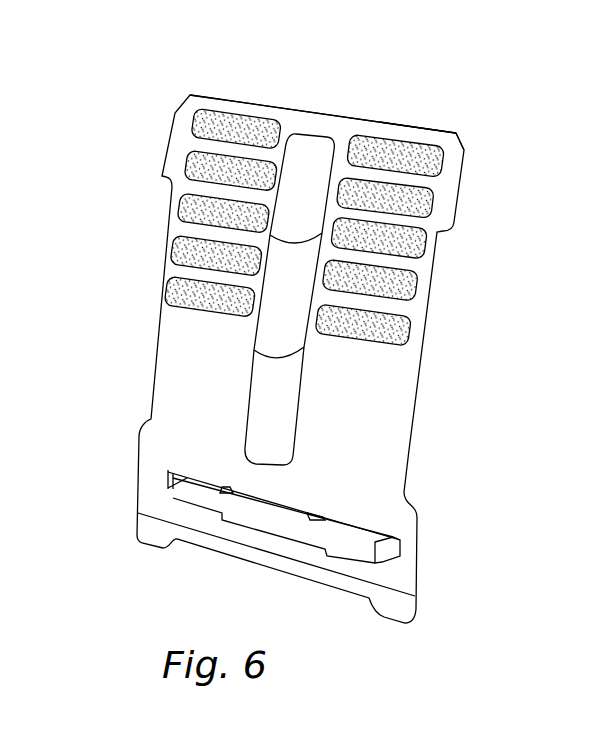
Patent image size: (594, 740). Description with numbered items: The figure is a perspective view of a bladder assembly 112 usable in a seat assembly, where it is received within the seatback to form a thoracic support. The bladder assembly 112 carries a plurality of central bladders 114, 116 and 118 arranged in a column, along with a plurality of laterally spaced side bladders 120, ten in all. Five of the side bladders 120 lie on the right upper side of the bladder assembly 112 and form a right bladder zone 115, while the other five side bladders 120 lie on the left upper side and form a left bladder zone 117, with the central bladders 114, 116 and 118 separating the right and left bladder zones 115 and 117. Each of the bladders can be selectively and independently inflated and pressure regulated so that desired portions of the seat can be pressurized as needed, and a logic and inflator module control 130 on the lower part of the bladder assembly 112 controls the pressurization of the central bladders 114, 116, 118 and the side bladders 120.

The bladder assembly 112 is at (412, 447).
The central bladder 114 is at (313, 214).
The right bladder zone 115 is at (275, 103).
The central bladder 116 is at (297, 300).
The left bladder zone 117 is at (422, 130).
The central bladder 118 is at (285, 414).
The laterally spaced side bladders 120 is at (428, 150).
The logic and inflator module control 130 is at (268, 530).